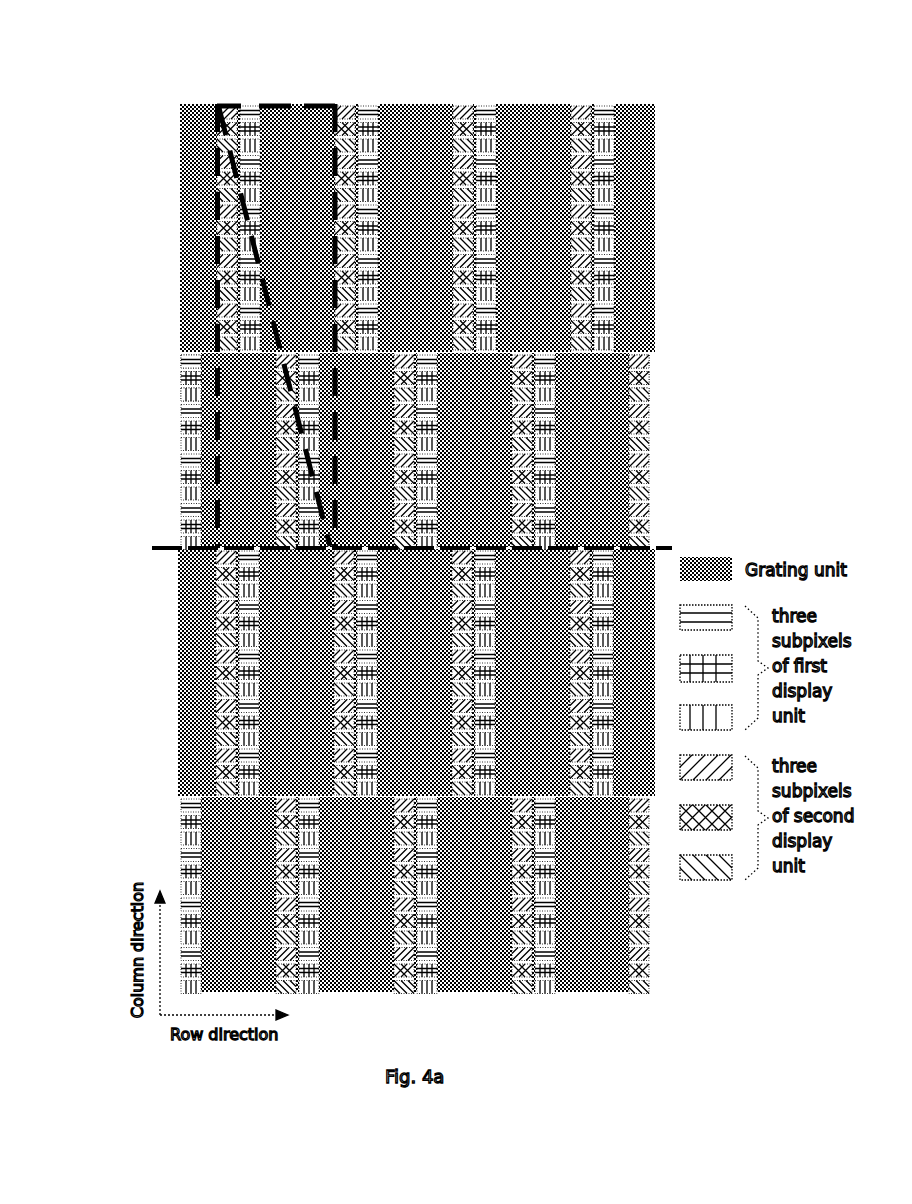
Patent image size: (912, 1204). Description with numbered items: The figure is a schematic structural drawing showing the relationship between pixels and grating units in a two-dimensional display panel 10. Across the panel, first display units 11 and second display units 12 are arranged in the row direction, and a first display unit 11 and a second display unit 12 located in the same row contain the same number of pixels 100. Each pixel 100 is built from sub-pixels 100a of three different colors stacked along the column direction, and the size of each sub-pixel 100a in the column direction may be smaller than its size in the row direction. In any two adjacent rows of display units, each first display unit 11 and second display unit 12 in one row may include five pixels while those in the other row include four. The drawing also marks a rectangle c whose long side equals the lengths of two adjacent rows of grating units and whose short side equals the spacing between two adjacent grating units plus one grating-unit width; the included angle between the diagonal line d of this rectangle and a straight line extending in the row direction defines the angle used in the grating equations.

The two-dimensional display panel 10 is at (478, 102).
The first display unit 11 is at (37, 352).
The second display unit 12 is at (793, 352).
The pixel 100 is at (86, 352).
The sub-pixel 100a is at (182, 358).
The rectangle c is at (284, 102).
The diagonal line d is at (338, 118).